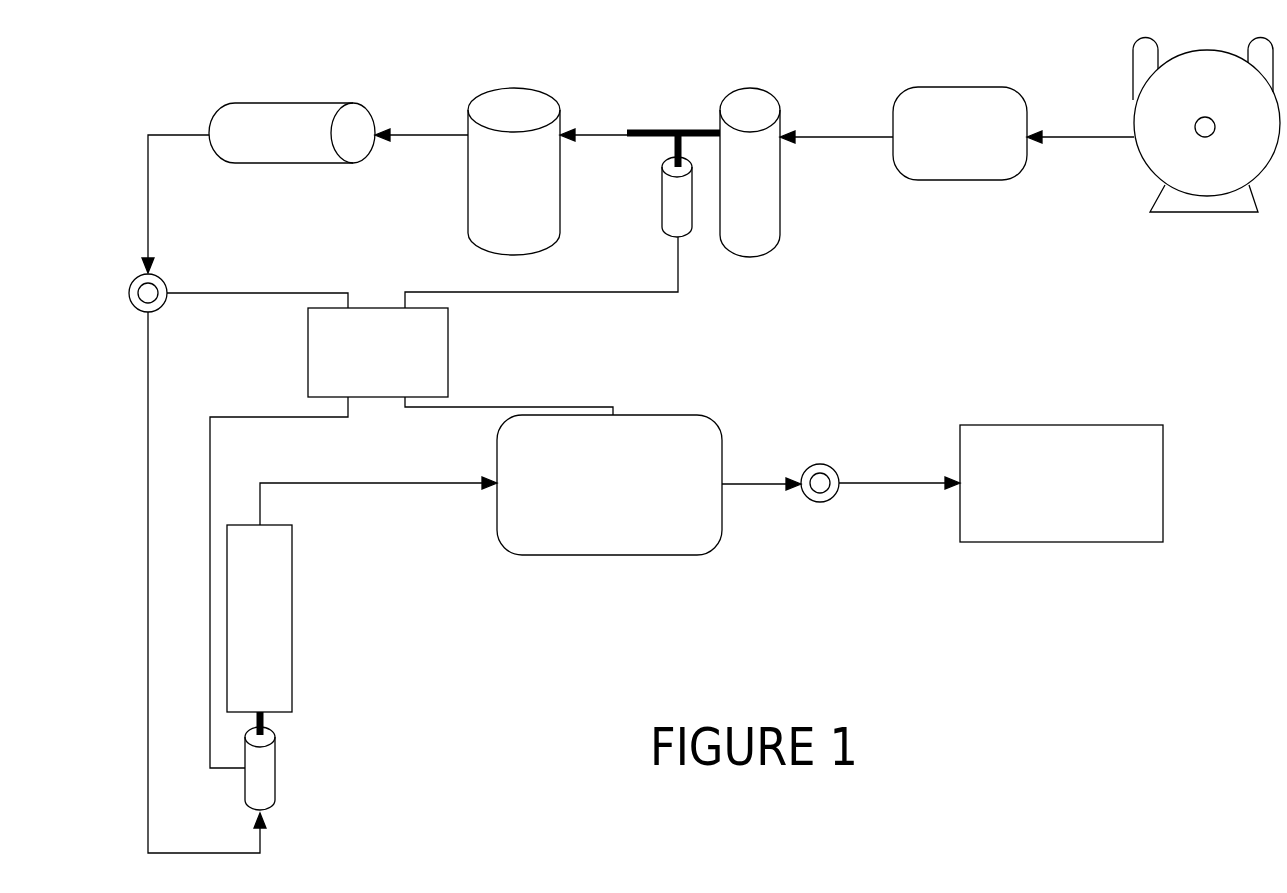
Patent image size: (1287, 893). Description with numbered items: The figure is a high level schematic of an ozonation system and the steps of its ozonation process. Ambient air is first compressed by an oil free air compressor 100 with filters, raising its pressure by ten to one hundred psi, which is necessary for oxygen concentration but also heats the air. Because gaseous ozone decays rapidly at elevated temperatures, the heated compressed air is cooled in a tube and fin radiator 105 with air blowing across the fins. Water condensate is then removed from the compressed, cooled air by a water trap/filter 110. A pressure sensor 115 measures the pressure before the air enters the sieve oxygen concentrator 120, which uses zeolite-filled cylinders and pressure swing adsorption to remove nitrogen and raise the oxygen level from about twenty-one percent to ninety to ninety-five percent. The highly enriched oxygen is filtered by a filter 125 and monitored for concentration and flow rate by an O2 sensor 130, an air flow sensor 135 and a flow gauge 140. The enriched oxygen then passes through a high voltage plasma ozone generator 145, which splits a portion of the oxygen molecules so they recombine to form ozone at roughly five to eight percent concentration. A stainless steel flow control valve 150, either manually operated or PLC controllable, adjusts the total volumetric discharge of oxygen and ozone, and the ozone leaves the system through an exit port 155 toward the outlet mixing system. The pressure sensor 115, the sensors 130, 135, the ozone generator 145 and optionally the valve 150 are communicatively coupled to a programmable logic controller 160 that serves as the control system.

The oil free air compressor 100 is at (1206, 125).
The tube and fin radiator 105 is at (960, 133).
The water trap/filter 110 is at (750, 172).
The pressure sensor 115 is at (653, 197).
The sieve oxygen concentrator 120 is at (514, 171).
The filter 125 is at (292, 133).
The O2 sensor 130 is at (124, 293).
The air flow sensor 135 is at (289, 768).
The flow gauge 140 is at (259, 618).
The high voltage plasma ozone generator 145 is at (609, 485).
The flow control valve 150 is at (822, 501).
The exit port 155 is at (1061, 483).
The programmable logic controller (PLC) 160 is at (378, 352).